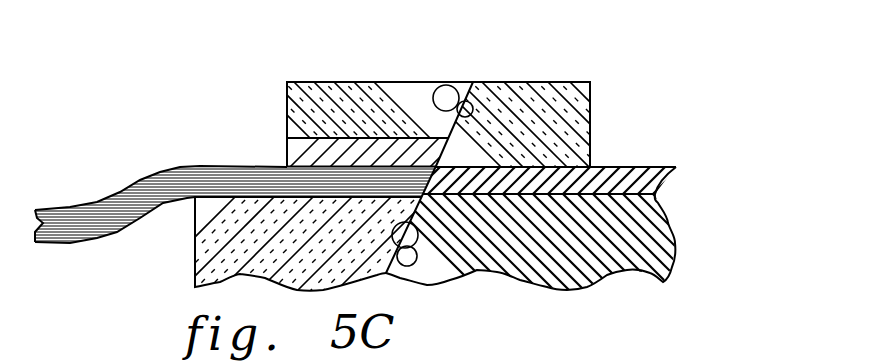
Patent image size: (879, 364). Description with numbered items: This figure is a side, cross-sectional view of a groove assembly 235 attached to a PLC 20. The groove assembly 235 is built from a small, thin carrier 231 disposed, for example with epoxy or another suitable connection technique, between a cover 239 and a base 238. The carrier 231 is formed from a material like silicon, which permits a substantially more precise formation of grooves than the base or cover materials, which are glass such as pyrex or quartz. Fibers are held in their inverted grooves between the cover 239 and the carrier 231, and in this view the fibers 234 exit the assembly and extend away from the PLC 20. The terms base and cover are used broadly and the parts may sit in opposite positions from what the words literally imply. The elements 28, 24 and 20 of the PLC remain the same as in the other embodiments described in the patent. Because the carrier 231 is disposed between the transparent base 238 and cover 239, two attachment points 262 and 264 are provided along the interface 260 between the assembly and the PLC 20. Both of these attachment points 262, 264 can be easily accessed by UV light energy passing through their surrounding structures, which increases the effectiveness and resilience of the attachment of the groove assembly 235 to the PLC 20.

The PLC 20 is at (650, 243).
The PLC element 24 is at (618, 172).
The PLC element 28 is at (578, 133).
The carrier 231 is at (300, 157).
The flexible circuit 234 is at (80, 203).
The groove assembly 235 is at (297, 72).
The base 238 is at (298, 120).
The cover 239 is at (213, 250).
The interface 260 is at (474, 68).
The attachment point 262 is at (443, 82).
The attachment point 264 is at (410, 280).